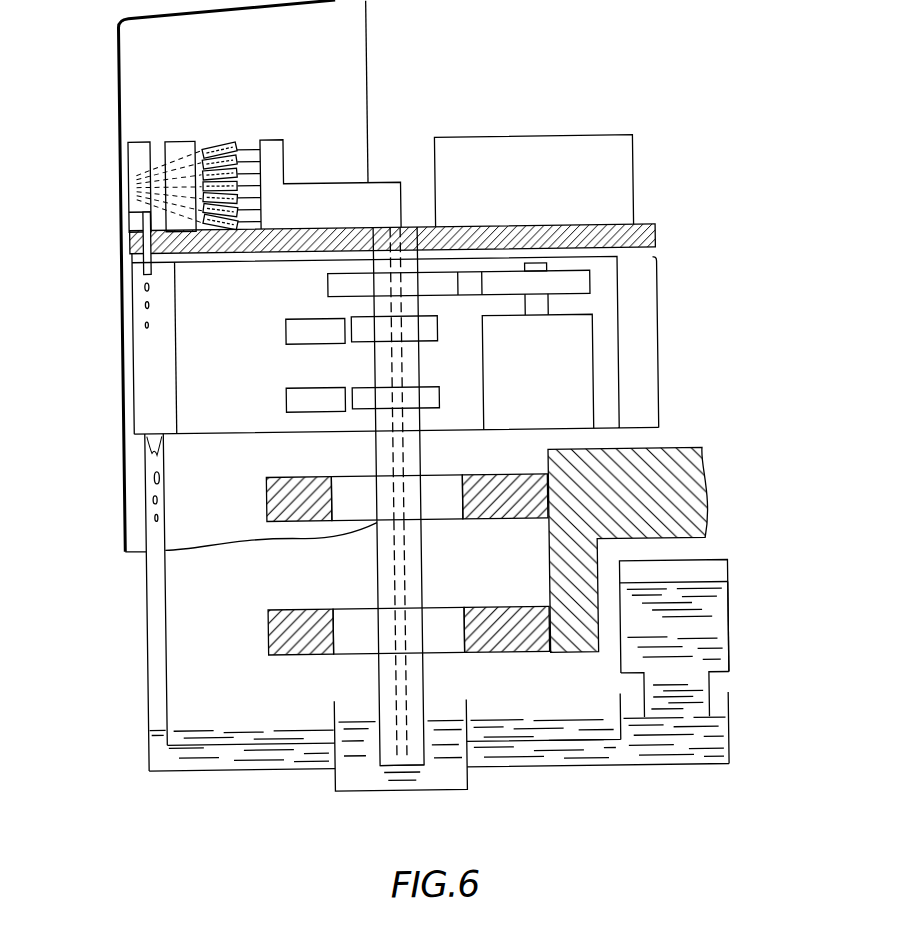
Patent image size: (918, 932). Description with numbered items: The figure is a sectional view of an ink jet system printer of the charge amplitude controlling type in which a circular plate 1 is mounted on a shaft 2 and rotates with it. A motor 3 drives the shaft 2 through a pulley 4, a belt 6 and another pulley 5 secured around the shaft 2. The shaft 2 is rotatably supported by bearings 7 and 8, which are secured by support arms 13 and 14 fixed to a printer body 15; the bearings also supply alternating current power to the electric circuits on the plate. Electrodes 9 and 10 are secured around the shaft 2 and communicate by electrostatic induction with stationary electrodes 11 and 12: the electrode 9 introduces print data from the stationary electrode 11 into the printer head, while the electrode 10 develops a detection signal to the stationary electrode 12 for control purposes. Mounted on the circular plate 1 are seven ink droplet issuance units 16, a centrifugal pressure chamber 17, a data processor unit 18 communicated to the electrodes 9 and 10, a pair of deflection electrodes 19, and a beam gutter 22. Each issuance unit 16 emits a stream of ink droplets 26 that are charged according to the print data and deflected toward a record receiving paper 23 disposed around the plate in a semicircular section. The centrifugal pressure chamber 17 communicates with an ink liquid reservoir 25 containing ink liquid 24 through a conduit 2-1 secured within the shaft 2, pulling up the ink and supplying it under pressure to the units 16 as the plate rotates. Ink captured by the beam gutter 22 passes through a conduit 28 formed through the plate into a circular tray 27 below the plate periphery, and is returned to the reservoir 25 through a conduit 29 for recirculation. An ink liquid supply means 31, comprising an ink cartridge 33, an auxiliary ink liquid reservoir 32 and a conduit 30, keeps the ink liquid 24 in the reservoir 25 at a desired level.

The circular plate 1 is at (655, 225).
The shaft 2 is at (375, 308).
The conduit 2-1 is at (407, 690).
The motor 3 is at (499, 370).
The pulley 4 is at (472, 284).
The pulley 5 is at (344, 283).
The belt 6 is at (469, 283).
The bearing 7 is at (352, 492).
The bearing 8 is at (361, 628).
The electrode 9 is at (368, 329).
The electrode 10 is at (368, 396).
The stationary electrode 11 is at (300, 323).
The stationary electrode 12 is at (306, 398).
The support arm 13 is at (304, 501).
The support arm 14 is at (302, 645).
The printer body 15 is at (559, 557).
The ink droplet issuance unit 16 is at (222, 141).
The centrifugal pressure chamber 17 is at (334, 199).
The data processor unit 18 is at (612, 150).
The deflection electrodes 19 is at (182, 143).
The beam gutter 22 is at (144, 143).
The record receiving paper 23 is at (127, 329).
The ink liquid 24 is at (363, 757).
The ink liquid reservoir 25 is at (412, 792).
The ink droplets 26 is at (192, 174).
The tray 27 is at (154, 412).
The conduit 28 is at (124, 256).
The conduit 29 is at (155, 636).
The conduit 30 is at (570, 757).
The ink liquid supply means 31 is at (732, 582).
The auxiliary ink liquid reservoir 32 is at (729, 716).
The ink cartridge 33 is at (730, 648).